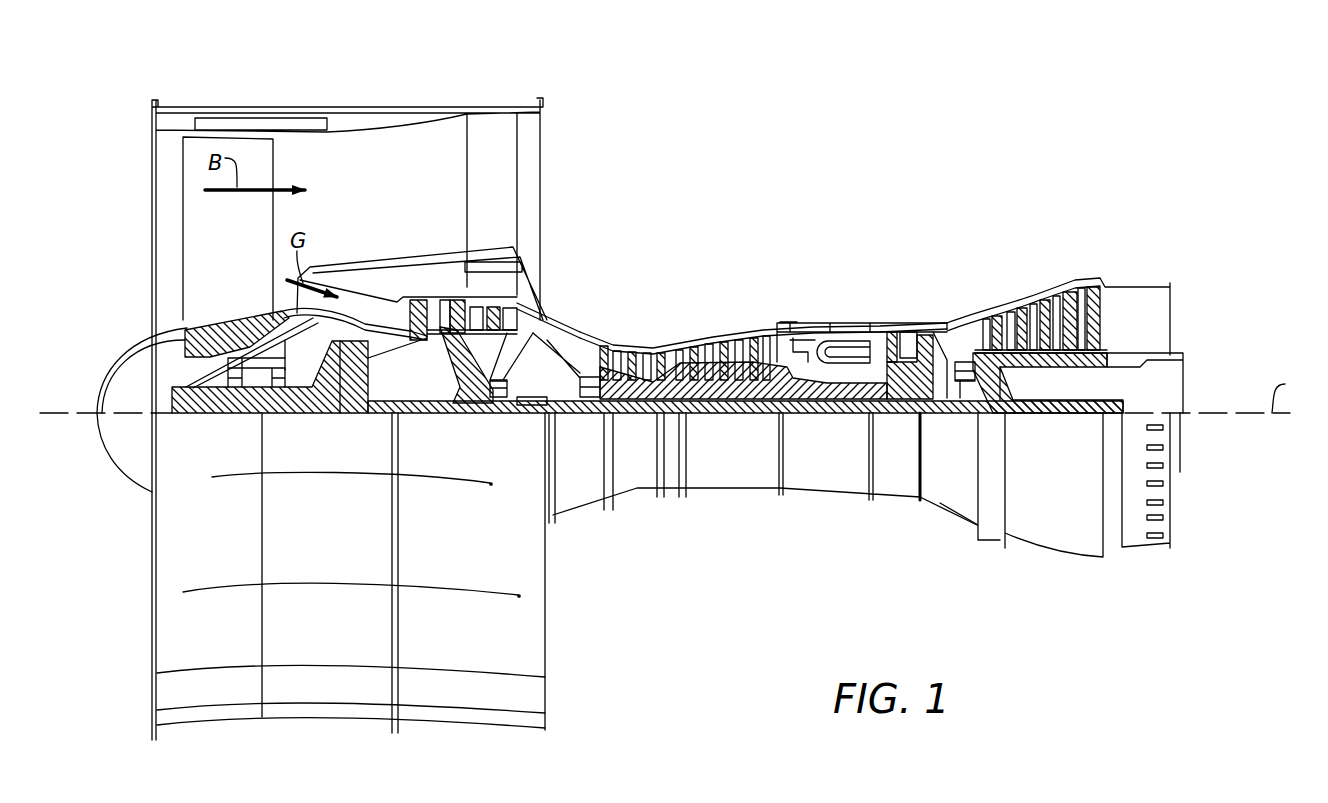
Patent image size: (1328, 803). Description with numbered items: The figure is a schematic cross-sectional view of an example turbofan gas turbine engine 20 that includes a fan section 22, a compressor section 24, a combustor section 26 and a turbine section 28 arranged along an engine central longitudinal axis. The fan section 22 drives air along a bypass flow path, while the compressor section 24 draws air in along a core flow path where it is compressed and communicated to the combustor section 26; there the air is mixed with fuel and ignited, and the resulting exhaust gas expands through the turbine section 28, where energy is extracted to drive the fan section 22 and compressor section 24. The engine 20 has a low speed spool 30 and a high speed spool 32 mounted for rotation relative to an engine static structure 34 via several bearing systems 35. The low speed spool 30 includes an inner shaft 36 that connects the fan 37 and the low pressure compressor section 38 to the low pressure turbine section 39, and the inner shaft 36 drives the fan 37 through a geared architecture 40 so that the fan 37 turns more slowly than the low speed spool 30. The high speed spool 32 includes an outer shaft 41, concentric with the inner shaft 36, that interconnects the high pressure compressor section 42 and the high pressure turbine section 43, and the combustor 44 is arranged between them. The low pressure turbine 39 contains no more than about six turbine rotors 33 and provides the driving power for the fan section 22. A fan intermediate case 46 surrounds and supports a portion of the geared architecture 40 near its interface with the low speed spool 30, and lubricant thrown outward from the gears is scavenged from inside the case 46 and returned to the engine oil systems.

The gas turbine engine 20 is at (848, 161).
The fan section 22 is at (273, 98).
The compressor section 24 is at (592, 320).
The combustor section 26 is at (838, 292).
The turbine section 28 is at (1012, 240).
The low speed spool 30 is at (524, 428).
The high speed spool 32 is at (761, 372).
The turbine rotors 33 is at (1088, 366).
The engine static structure 34 is at (640, 500).
The bearing systems 35 is at (500, 405).
The inner shaft 36 is at (563, 414).
The fan 37 is at (237, 240).
The low pressure compressor section 38 is at (455, 322).
The low pressure turbine section 39 is at (1047, 298).
The geared architecture 40 is at (357, 396).
The outer shaft 41 is at (716, 398).
The high pressure compressor section 42 is at (678, 348).
The high pressure turbine section 43 is at (907, 332).
The combustor 44 is at (841, 350).
The fan intermediate case 46 is at (367, 270).